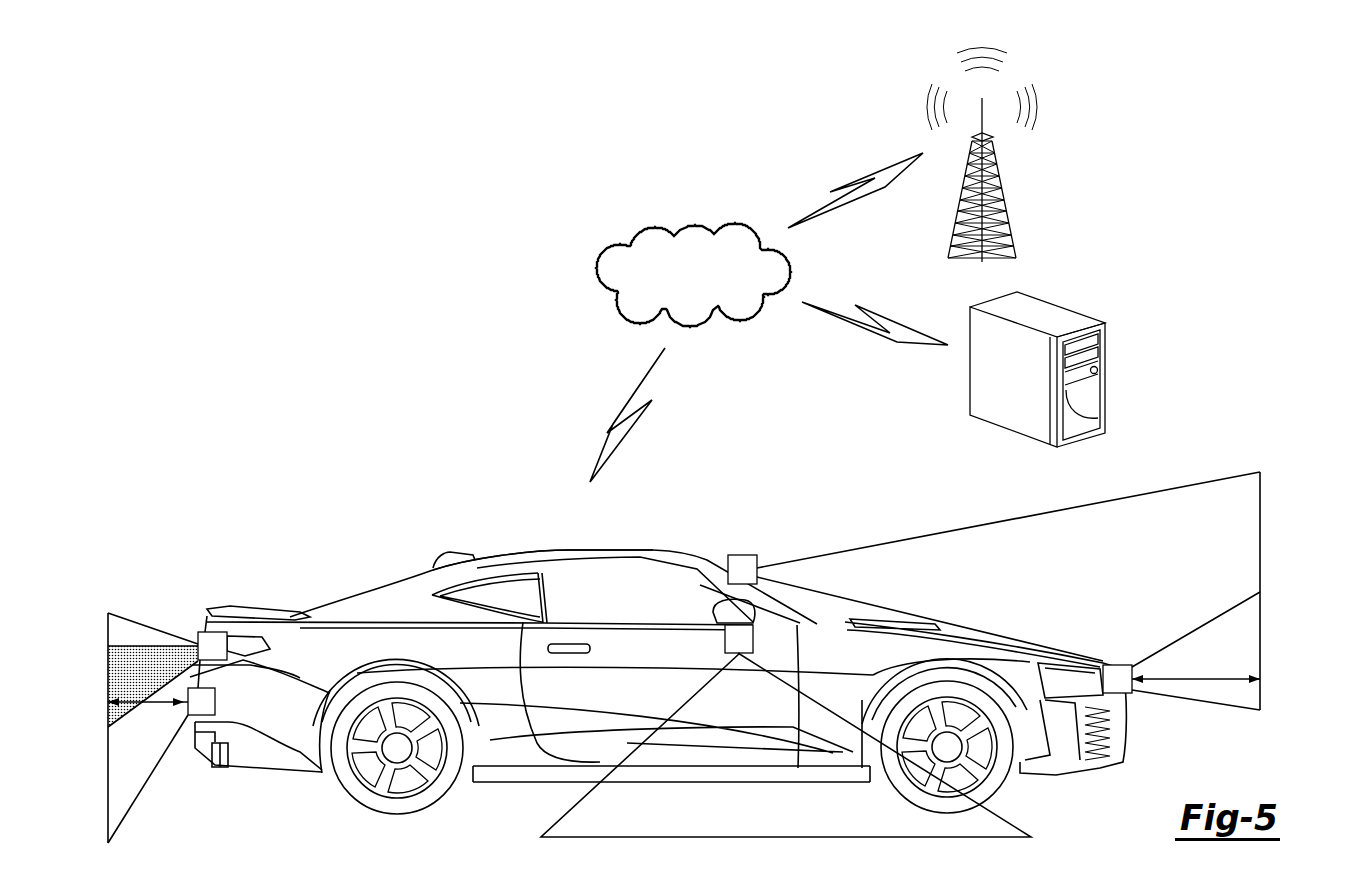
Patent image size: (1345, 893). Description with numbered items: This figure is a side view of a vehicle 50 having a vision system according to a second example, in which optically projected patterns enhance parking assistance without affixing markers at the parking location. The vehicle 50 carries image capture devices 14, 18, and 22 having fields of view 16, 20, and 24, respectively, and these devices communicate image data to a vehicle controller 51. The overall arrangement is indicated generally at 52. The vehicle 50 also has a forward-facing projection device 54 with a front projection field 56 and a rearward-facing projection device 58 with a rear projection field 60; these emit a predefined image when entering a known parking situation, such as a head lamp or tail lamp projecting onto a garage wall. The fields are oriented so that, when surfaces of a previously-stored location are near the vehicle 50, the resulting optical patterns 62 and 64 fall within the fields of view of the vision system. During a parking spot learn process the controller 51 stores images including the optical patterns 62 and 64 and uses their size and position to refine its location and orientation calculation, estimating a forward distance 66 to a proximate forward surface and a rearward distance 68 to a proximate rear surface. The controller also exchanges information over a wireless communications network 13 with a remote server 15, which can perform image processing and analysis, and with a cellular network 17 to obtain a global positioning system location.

The wireless communications network 13 is at (625, 240).
The image capture device 14 is at (740, 555).
The remote server 15 is at (1062, 306).
The field of view 16 is at (985, 522).
The cellular network 17 is at (1038, 108).
The image capture device 18 is at (215, 702).
The field of view 20 is at (113, 615).
The image capture device 22 is at (725, 637).
The field of view 24 is at (552, 820).
The vehicle 50 is at (365, 593).
The vehicle controller 51 is at (852, 665).
The vehicle system 52 is at (534, 518).
The forward-facing projection device 54 is at (1125, 694).
The front projection field 56 is at (1237, 601).
The rearward-facing projection device 58 is at (207, 632).
The rear projection field 60 is at (168, 645).
The optical pattern 62 is at (1260, 633).
The optical pattern 64 is at (108, 708).
The forward distance 66 is at (1218, 683).
The rearward distance 68 is at (155, 710).